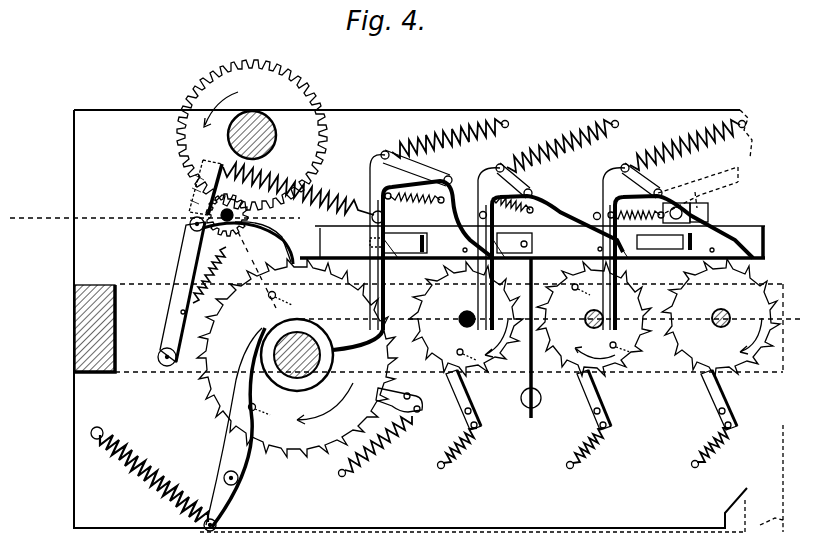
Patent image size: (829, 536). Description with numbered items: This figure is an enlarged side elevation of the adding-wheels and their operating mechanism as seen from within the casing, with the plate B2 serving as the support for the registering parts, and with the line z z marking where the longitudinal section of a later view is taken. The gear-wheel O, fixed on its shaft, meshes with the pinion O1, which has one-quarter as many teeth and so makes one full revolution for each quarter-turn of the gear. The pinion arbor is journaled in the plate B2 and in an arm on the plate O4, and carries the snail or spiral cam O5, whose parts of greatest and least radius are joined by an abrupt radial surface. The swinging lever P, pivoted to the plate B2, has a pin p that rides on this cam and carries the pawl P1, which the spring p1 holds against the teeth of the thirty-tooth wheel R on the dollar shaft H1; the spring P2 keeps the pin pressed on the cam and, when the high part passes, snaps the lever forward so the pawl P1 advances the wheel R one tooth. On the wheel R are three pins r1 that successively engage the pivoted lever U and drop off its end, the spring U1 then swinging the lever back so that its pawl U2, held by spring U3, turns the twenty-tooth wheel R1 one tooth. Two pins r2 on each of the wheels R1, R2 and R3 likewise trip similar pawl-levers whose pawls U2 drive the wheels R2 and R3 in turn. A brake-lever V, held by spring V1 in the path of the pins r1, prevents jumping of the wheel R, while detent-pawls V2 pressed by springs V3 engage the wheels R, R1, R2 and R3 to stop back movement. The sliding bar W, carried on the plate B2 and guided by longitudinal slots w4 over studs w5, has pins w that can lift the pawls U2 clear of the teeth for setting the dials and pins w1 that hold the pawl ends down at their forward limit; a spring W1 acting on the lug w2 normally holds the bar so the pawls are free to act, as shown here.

The driving gear wheel A is at (266, 124).
The plate B2 is at (428, 321).
The section line z z is at (406, 291).
The gear-wheel O is at (248, 273).
The pinion O1 is at (250, 213).
The plate O4 is at (667, 374).
The snail or spiral cam O5 is at (190, 196).
The pin p is at (190, 226).
The spring p1 is at (200, 306).
The swinging lever P is at (170, 338).
The pawl P1 is at (276, 230).
The spring P2 is at (340, 195).
The pivoted lever U is at (596, 212).
The spring U1 is at (670, 150).
The pawl U2 is at (708, 230).
The spring U3 is at (645, 212).
The sliding bar W is at (766, 232).
The spring W1 is at (536, 393).
The pins w is at (450, 252).
The pins w1 is at (765, 248).
The lug or pin w2 is at (465, 252).
The longitudinal slots w4 is at (640, 252).
The studs w5 is at (424, 234).
The wheel R is at (297, 358).
The wheel R1 is at (462, 319).
The wheel R2 is at (594, 319).
The wheel R3 is at (721, 318).
The pins r1 is at (268, 344).
The pins r2 is at (543, 315).
The shaft H1 is at (318, 392).
The brake-lever V is at (225, 462).
The spring V1 is at (148, 465).
The detent-pawls V2 is at (422, 407).
The springs V3 is at (466, 455).